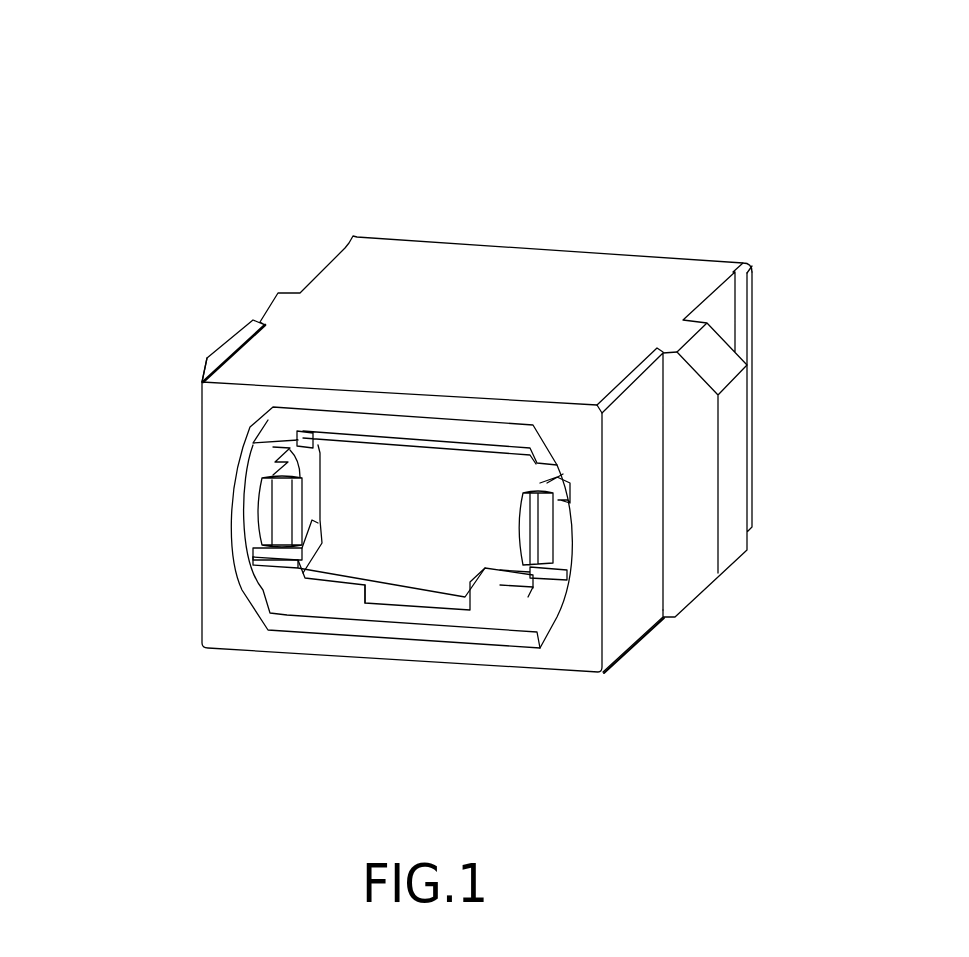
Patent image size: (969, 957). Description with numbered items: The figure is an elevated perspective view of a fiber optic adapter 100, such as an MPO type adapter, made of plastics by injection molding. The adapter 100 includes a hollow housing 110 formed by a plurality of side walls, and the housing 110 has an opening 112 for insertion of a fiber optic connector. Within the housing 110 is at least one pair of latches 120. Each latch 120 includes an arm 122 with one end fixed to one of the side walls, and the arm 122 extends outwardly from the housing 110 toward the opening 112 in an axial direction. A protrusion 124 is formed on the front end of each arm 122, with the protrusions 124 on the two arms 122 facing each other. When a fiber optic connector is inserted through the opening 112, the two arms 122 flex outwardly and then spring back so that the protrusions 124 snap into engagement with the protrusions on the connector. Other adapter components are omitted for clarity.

The fiber optic adapter 100 is at (393, 88).
The housing 110 is at (480, 287).
The opening 112 is at (430, 409).
The latches 120 is at (427, 566).
The arm 122 is at (473, 467).
The protrusion 124 is at (410, 662).